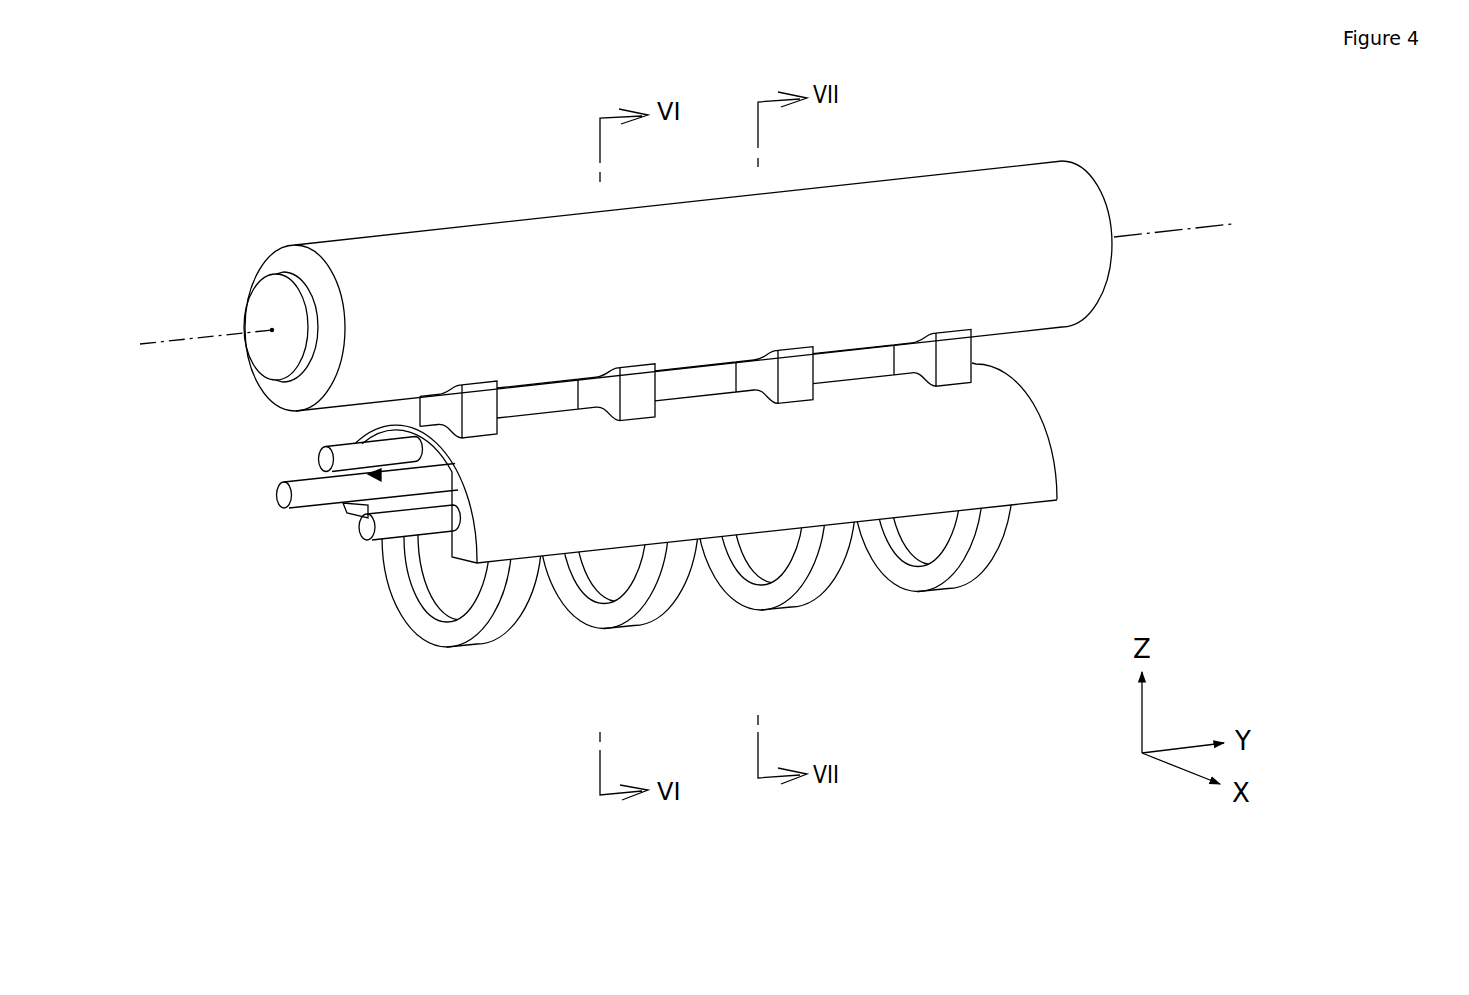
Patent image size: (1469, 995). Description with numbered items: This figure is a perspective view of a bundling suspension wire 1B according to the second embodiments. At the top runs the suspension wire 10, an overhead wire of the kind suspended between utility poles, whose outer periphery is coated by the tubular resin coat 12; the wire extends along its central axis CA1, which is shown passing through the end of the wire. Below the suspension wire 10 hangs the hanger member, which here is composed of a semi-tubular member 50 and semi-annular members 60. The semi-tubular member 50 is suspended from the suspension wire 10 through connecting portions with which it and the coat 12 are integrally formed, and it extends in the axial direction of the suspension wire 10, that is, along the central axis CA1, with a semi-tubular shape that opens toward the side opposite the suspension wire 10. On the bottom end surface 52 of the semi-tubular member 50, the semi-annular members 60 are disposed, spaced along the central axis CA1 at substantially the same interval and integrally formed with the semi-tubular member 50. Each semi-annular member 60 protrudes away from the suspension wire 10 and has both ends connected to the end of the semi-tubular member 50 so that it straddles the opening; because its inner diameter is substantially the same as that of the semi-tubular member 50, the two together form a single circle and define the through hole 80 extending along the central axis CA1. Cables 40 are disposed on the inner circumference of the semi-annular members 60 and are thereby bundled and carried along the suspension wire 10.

The bundling suspension wire 1B is at (1084, 96).
The suspension wire 10 is at (697, 197).
The coat 12 is at (292, 243).
The central axis CA1 is at (658, 293).
The wires 40 is at (358, 520).
The semi-tubular member 50 is at (1046, 428).
The bottom end surface 52 is at (352, 518).
The semi-annular member 60 is at (478, 645).
The through hole 80 is at (445, 612).